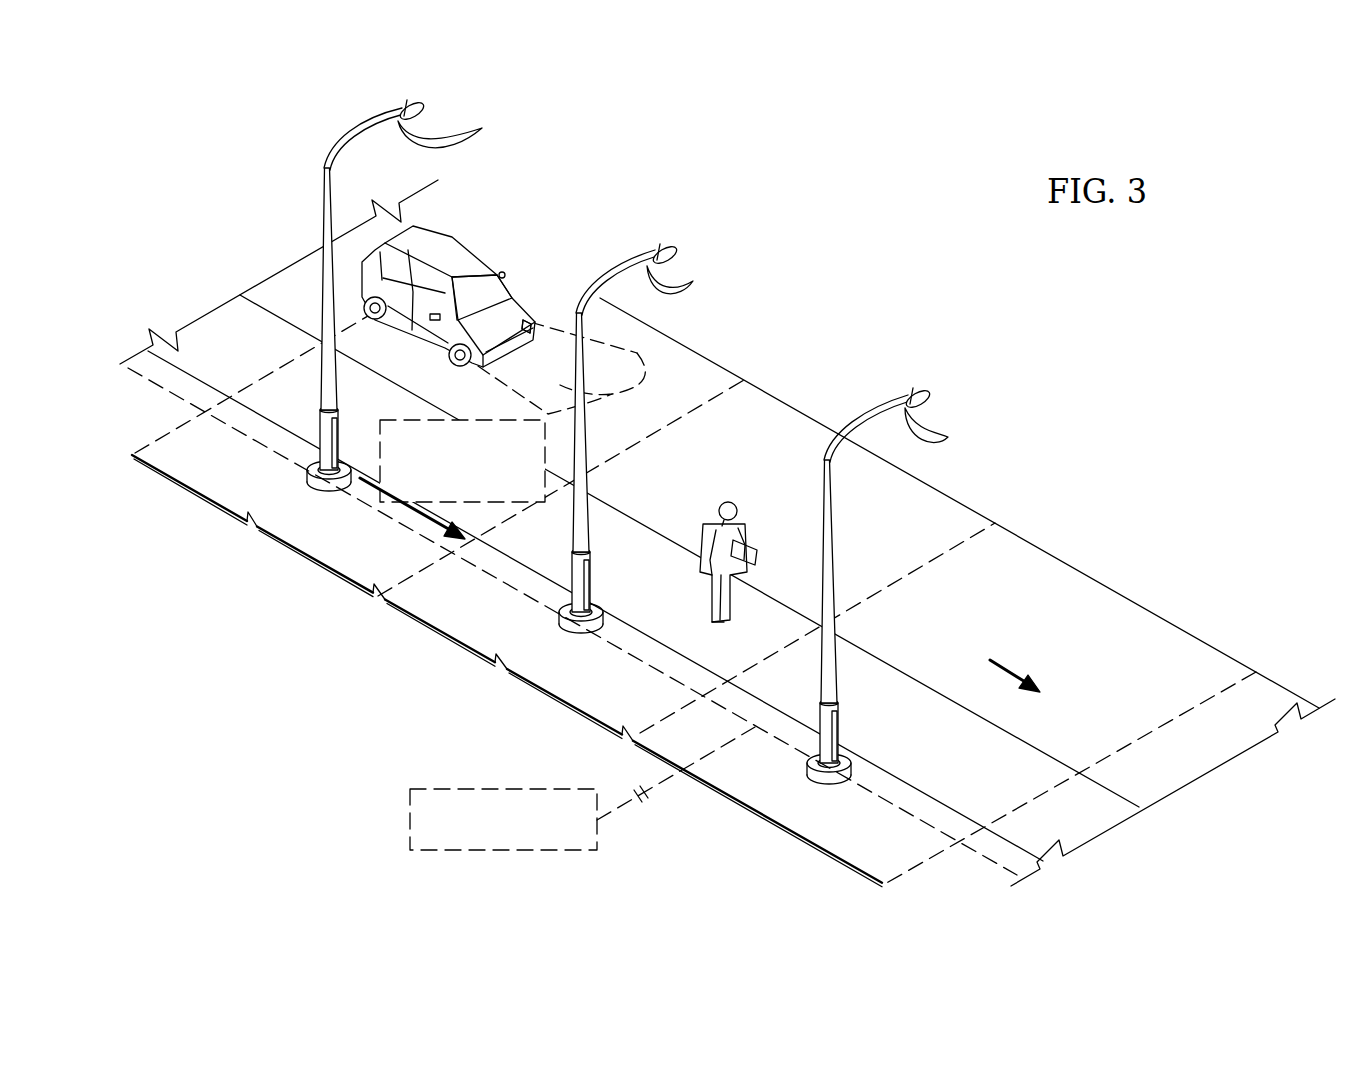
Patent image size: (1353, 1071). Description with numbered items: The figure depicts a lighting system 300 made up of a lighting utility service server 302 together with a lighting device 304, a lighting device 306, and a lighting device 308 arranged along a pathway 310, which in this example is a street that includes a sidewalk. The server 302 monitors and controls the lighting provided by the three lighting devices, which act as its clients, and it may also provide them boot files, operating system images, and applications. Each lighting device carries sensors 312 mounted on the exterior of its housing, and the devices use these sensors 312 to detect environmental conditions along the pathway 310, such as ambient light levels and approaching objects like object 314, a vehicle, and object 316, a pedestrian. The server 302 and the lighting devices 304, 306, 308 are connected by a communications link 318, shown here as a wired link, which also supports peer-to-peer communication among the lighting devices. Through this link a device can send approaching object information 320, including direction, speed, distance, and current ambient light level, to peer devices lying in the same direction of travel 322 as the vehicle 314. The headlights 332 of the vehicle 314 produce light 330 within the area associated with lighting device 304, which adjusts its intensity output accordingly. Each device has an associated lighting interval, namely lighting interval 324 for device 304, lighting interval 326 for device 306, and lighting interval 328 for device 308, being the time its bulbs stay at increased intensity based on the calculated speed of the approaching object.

The lighting system 300 is at (888, 220).
The lighting utility service server 302 is at (410, 820).
The lighting device 304 is at (422, 106).
The lighting device 306 is at (672, 248).
The lighting device 308 is at (925, 392).
The pathway 310 is at (1139, 612).
The sensors 312 is at (702, 294).
The object 314 is at (465, 248).
The object 316 is at (715, 508).
The communications link 318 is at (935, 828).
The approaching object information 320 is at (510, 504).
The direction of travel 322 is at (1008, 668).
The lighting interval 324 is at (258, 530).
The lighting interval 326 is at (509, 675).
The lighting interval 328 is at (757, 814).
The light 330 is at (668, 380).
The headlights 332 is at (490, 252).